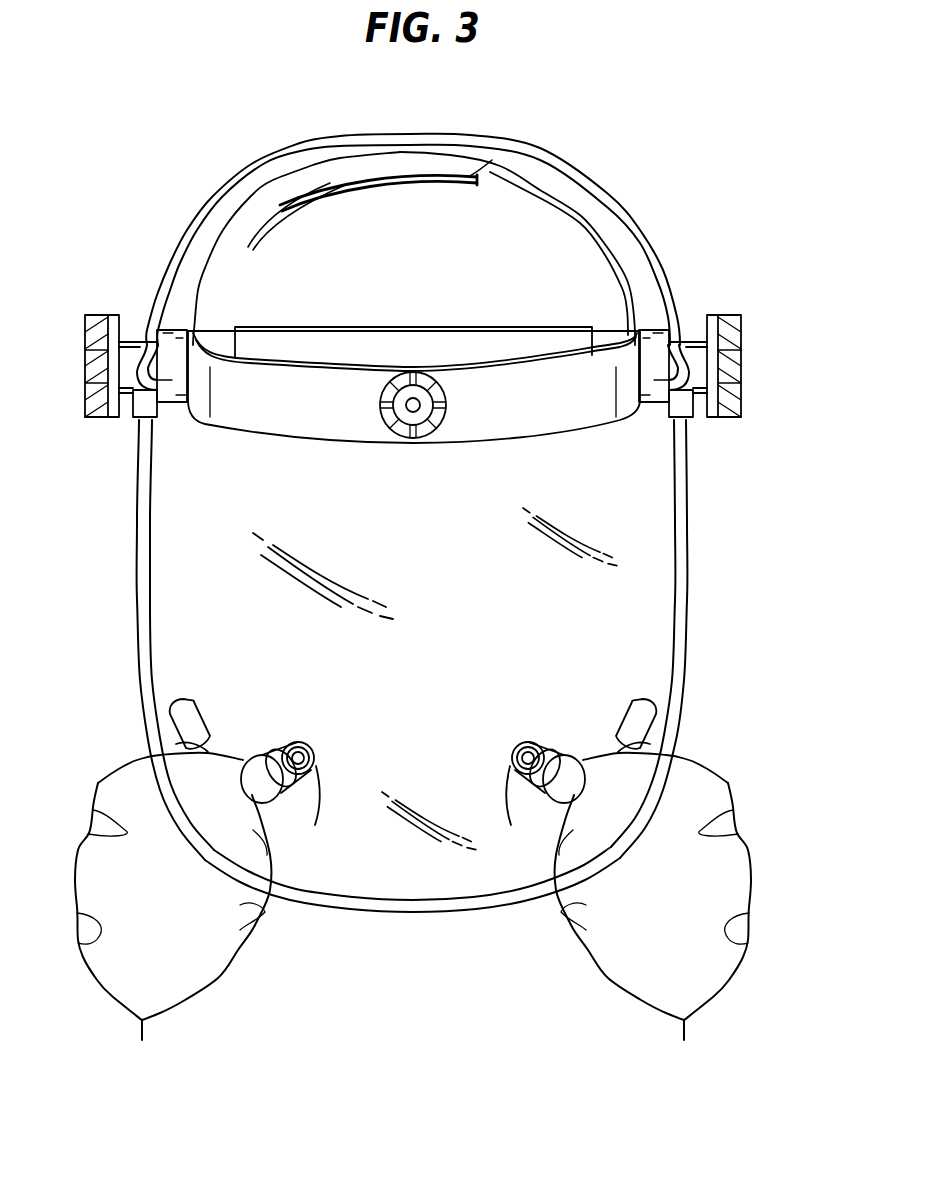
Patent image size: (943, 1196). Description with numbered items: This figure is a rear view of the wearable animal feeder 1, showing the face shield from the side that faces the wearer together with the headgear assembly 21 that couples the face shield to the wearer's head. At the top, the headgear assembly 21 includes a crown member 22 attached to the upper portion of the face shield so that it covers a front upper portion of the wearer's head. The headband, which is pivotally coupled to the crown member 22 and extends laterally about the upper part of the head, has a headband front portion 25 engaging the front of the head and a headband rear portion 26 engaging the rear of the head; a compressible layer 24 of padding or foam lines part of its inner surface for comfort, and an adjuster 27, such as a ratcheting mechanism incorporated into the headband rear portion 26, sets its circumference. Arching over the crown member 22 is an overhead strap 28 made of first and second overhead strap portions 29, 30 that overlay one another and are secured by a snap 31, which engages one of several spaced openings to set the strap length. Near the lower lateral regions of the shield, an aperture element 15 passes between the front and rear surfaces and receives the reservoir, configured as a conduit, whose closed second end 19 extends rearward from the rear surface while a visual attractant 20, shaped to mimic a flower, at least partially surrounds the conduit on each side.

The wearable animal feeder 1 is at (95, 81).
The crown member 22 is at (350, 135).
The overhead strap 28 is at (422, 157).
The snap 31 is at (524, 150).
The first overhead strap portion 29 is at (580, 216).
The second overhead strap portion 30 is at (198, 290).
The compressible layer 24 is at (498, 340).
The headgear assembly 21 is at (694, 287).
The headband front portion 25 is at (605, 345).
The headband rear portion 26 is at (573, 407).
The adjuster 27 is at (412, 405).
The aperture element 15 is at (260, 790).
The second end of the conduit 19 is at (318, 768).
The visual attractant 20 is at (143, 997).